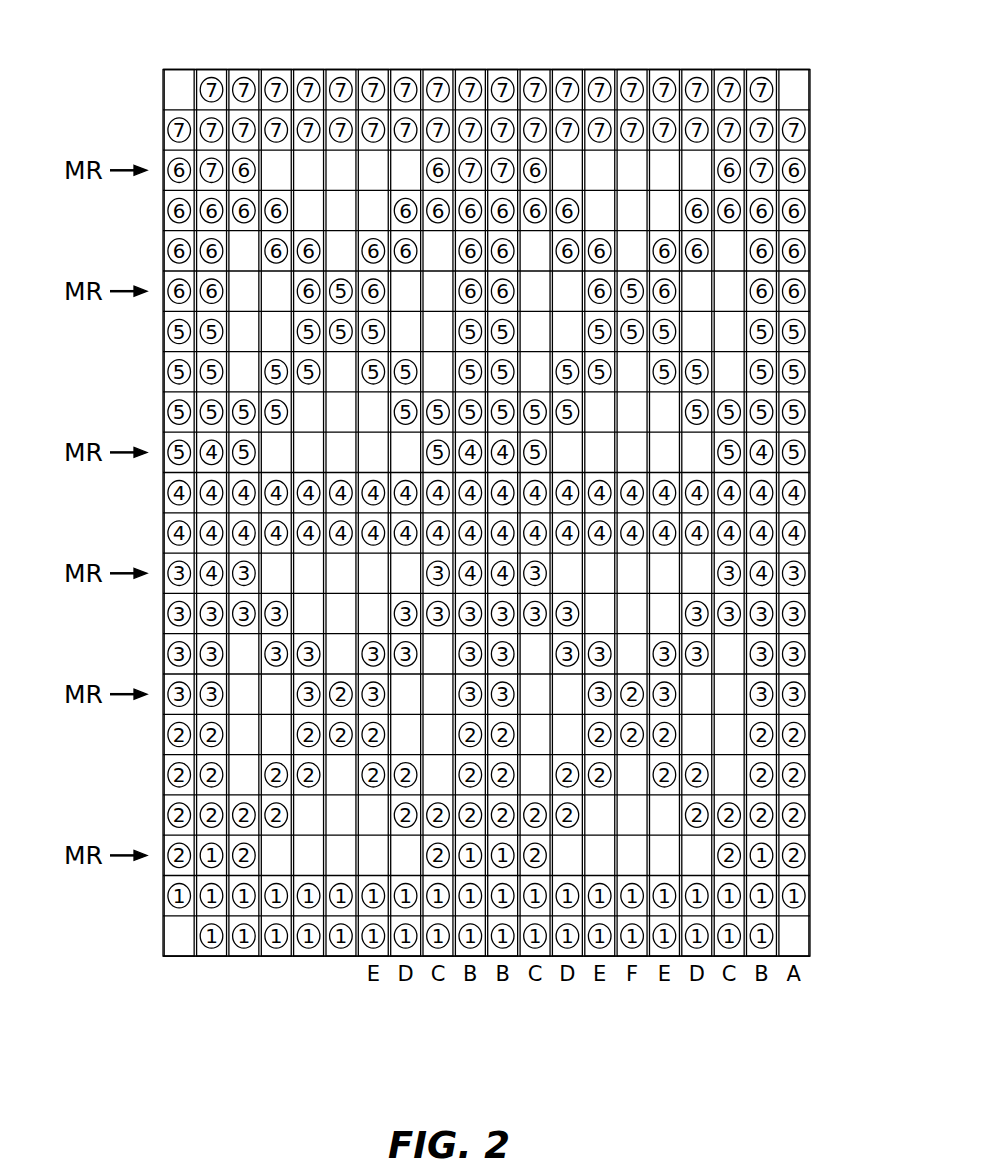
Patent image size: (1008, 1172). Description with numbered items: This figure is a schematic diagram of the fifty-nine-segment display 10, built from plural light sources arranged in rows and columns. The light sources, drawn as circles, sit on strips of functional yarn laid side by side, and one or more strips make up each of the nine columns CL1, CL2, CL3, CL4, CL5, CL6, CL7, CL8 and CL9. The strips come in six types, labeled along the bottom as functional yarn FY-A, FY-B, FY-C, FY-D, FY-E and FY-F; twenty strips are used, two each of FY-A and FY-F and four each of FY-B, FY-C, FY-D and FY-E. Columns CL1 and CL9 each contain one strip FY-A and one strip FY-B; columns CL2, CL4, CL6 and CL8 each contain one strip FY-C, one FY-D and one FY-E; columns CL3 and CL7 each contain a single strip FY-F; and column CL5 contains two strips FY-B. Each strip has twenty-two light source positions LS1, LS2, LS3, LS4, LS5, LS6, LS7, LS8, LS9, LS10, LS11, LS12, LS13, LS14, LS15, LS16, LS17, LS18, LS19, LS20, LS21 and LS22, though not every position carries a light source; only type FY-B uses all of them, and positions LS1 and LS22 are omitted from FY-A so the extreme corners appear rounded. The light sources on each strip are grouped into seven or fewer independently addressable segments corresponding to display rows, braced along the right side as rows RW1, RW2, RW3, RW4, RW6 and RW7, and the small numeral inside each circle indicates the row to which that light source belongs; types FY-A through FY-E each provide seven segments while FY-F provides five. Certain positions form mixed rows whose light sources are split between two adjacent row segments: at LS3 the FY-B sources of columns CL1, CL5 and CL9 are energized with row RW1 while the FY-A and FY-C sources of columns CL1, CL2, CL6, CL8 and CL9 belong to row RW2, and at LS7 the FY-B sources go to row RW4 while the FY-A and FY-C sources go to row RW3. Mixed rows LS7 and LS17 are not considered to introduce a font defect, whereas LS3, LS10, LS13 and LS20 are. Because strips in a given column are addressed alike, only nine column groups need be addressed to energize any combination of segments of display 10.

The 59-segment display 10 is at (126, 33).
The light source position LS1 is at (200, 936).
The light source position LS2 is at (168, 896).
The light source position LS3 is at (168, 855).
The light source position LS4 is at (168, 815).
The light source position LS5 is at (168, 775).
The light source position LS6 is at (168, 734).
The light source position LS7 is at (168, 694).
The light source position LS8 is at (168, 654).
The light source position LS9 is at (168, 614).
The light source position LS10 is at (168, 573).
The light source position LS11 is at (168, 533).
The light source position LS12 is at (168, 493).
The light source position LS13 is at (168, 452).
The light source position LS14 is at (168, 412).
The light source position LS15 is at (168, 372).
The light source position LS16 is at (168, 332).
The light source position LS17 is at (168, 291).
The light source position LS18 is at (168, 251).
The light source position LS19 is at (168, 211).
The light source position LS20 is at (168, 170).
The light source position LS21 is at (168, 130).
The light source position LS22 is at (200, 90).
The column CL1 is at (166, 63).
The column CL2 is at (322, 63).
The column CL3 is at (328, 63).
The column CL4 is at (360, 63).
The column CL5 is at (457, 63).
The column CL6 is at (613, 63).
The column CL7 is at (619, 63).
The column CL8 is at (651, 63).
The column CL9 is at (748, 63).
The row RW1 is at (812, 855).
The row RW2 is at (812, 694).
The row RW3 is at (812, 573).
The row RW4 is at (812, 452).
The row RW6 is at (812, 170).
The row RW7 is at (812, 70).
The type A functional yarn strip FY-A is at (172, 957).
The type B functional yarn strip FY-B is at (202, 957).
The type C functional yarn strip FY-C is at (233, 957).
The type D functional yarn strip FY-D is at (265, 957).
The type E functional yarn strip FY-E is at (297, 957).
The type F functional yarn strip FY-F is at (330, 957).